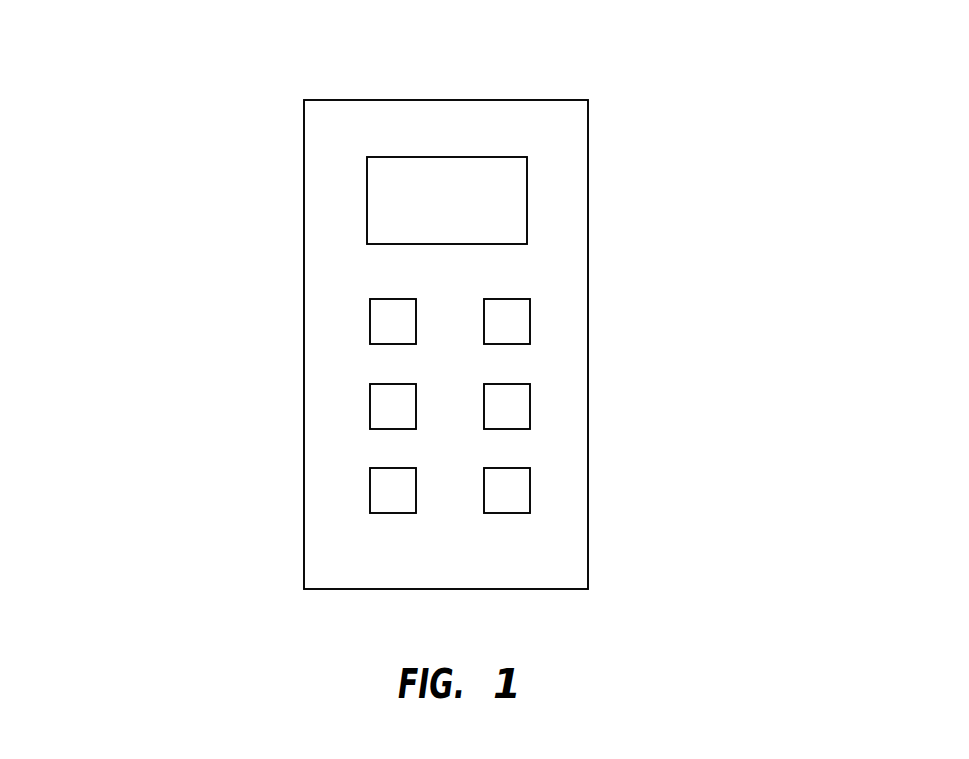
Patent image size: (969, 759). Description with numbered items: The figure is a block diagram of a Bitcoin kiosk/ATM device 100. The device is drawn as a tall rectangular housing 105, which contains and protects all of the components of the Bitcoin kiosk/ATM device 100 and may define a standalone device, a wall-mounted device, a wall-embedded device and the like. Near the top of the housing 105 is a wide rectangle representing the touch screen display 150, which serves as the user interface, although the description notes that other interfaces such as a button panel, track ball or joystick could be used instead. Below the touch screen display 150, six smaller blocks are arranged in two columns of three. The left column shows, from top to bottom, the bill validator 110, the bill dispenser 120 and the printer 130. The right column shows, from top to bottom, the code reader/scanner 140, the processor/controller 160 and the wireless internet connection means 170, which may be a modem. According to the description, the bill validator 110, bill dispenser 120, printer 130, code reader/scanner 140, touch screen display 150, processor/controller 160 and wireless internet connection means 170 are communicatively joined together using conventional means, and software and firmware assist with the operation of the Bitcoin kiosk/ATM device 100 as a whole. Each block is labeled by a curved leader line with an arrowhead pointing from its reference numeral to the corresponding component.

The Bitcoin kiosk/ATM device 100 is at (640, 127).
The housing 105 is at (304, 170).
The bill validator 110 is at (350, 321).
The bill dispenser 120 is at (350, 420).
The printer 130 is at (350, 510).
The code reader/scanner 140 is at (558, 318).
The touch screen display 150 is at (528, 189).
The processor/controller 160 is at (545, 406).
The wireless internet connection means 170 is at (547, 493).